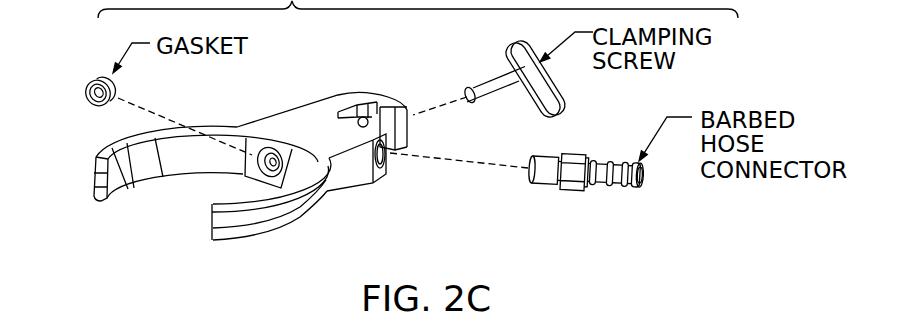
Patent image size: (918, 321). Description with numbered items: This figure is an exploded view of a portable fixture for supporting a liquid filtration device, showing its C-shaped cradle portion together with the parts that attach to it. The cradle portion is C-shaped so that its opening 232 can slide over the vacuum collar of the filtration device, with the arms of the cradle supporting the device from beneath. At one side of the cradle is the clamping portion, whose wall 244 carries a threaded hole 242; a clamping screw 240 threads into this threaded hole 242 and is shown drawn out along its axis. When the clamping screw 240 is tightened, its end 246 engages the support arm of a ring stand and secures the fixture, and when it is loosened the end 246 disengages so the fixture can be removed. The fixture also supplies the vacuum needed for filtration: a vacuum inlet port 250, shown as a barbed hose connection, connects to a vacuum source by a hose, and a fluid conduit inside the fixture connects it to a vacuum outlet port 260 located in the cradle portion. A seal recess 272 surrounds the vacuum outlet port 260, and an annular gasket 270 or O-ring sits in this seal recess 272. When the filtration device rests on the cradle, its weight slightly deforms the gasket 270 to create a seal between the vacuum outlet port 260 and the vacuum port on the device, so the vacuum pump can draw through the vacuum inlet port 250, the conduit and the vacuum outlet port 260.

The opening 232 is at (142, 198).
The wall 244 is at (348, 93).
The threaded hole 242 is at (381, 130).
The end 246 is at (468, 85).
The clamping screw 240 is at (508, 85).
The vacuum outlet port 260 is at (274, 159).
The seal recess 272 is at (252, 177).
The gasket 270 is at (92, 81).
The vacuum inlet port 250 is at (567, 190).